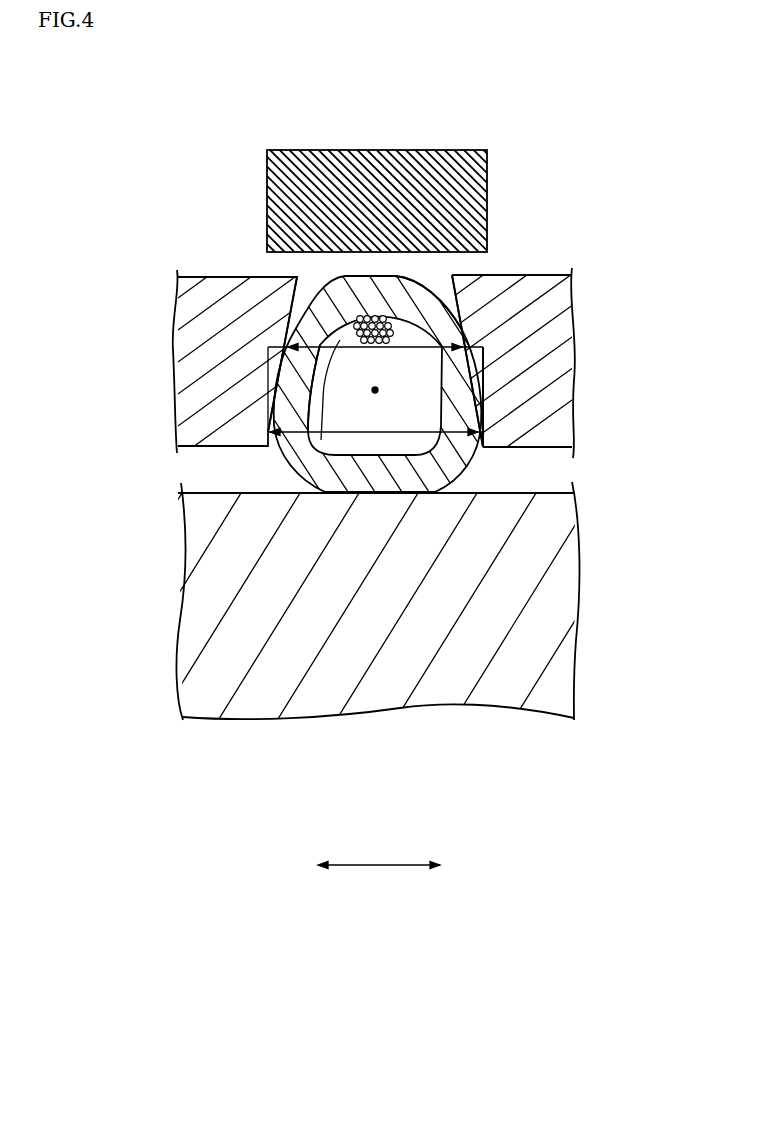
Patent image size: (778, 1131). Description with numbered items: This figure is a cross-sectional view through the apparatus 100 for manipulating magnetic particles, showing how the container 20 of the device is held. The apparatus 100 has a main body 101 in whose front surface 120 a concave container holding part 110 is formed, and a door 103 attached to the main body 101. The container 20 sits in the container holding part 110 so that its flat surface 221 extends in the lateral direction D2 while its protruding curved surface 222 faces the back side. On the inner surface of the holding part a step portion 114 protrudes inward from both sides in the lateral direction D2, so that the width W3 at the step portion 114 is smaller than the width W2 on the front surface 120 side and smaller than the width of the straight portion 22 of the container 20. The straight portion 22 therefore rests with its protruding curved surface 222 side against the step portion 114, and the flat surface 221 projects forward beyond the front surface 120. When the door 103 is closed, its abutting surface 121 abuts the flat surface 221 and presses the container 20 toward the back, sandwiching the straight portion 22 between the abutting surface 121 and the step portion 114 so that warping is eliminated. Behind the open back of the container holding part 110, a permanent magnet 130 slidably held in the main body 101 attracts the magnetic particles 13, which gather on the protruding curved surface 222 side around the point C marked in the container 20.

The apparatus for manipulating magnetic particles 100 is at (206, 208).
The permanent magnet 130 is at (368, 172).
The main body 101 is at (178, 313).
The container holding part 110 is at (455, 490).
The step portion 114 is at (486, 370).
The front surface 120 is at (537, 448).
The door 103 is at (378, 688).
The abutting surface 121 is at (220, 493).
The container 20 is at (419, 288).
The protruding curved surface 222 is at (435, 285).
The straight portion 22 is at (285, 432).
The flat surface 221 is at (360, 494).
The magnetic particles 13 is at (392, 327).
The center of seal member C is at (380, 390).
The width on the front surface side W2 is at (325, 392).
The width at the step portion W3 is at (340, 347).
The lateral direction D2 is at (380, 865).